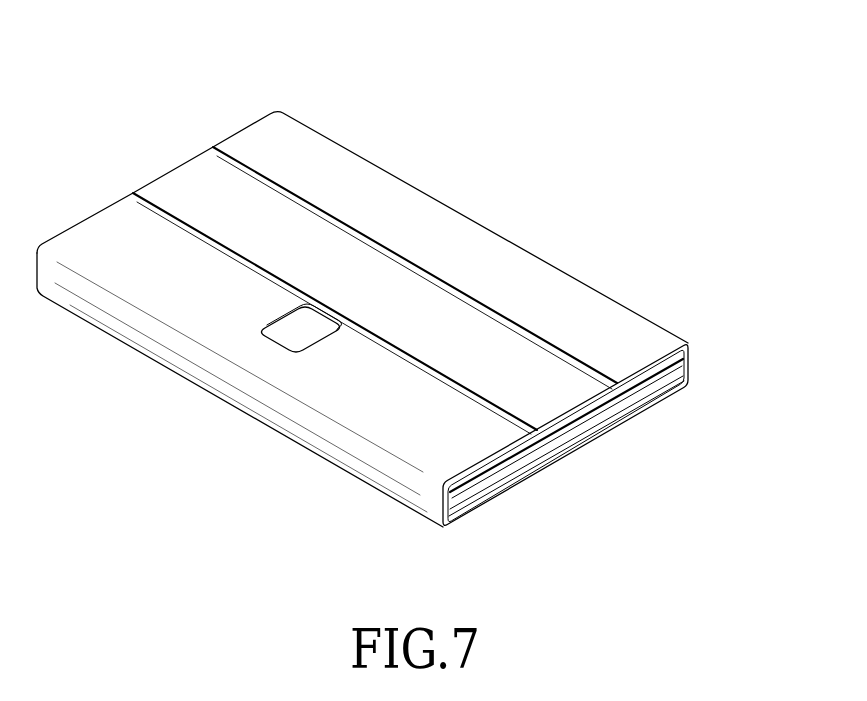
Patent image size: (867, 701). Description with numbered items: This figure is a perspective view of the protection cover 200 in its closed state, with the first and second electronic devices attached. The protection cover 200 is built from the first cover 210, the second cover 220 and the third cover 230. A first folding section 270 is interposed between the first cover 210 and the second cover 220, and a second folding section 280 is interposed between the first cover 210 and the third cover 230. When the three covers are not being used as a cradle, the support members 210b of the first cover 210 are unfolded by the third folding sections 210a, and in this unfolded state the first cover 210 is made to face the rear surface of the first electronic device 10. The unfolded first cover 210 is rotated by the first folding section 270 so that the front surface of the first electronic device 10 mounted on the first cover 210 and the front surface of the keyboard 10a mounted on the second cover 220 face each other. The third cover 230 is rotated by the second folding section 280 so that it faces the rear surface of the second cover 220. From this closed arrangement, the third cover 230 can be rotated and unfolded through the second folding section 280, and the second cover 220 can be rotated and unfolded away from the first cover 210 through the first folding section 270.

The protection cover 200 is at (472, 140).
The first cover 210 is at (533, 250).
The third folding sections 210a is at (210, 150).
The support members 210b is at (288, 243).
The second cover 220 is at (593, 440).
The third cover 230 is at (512, 493).
The first folding section 270 is at (690, 368).
The second folding section 280 is at (328, 443).
The first electronic device 10 is at (648, 382).
The keyboard 10a is at (627, 413).